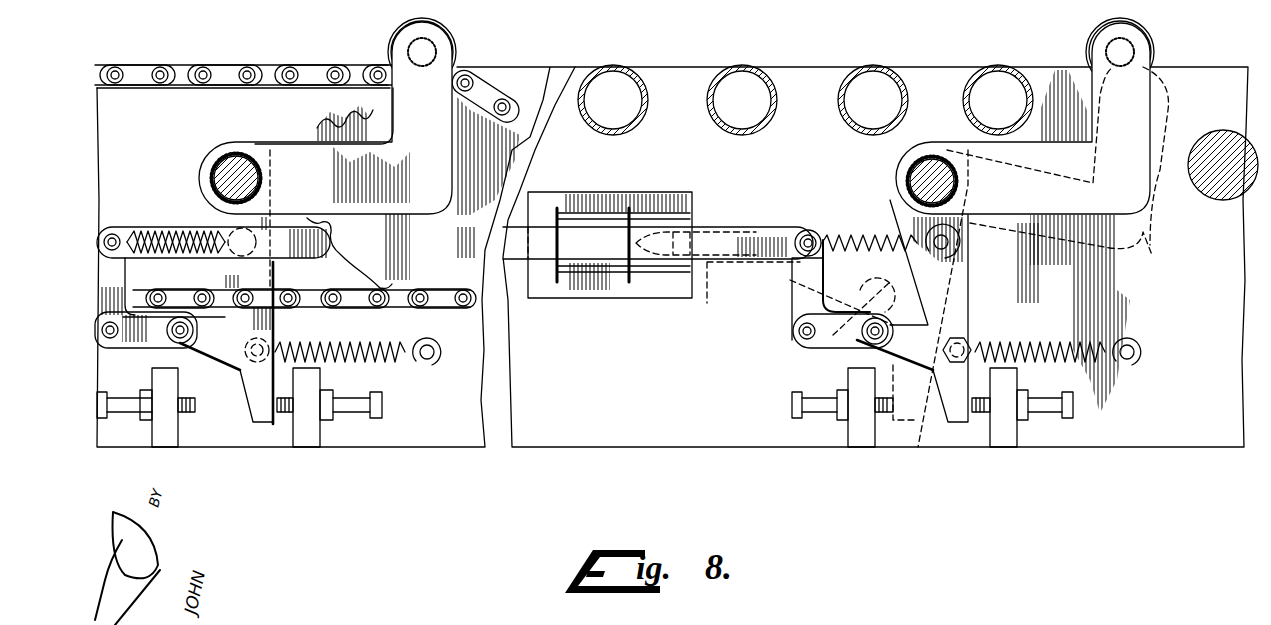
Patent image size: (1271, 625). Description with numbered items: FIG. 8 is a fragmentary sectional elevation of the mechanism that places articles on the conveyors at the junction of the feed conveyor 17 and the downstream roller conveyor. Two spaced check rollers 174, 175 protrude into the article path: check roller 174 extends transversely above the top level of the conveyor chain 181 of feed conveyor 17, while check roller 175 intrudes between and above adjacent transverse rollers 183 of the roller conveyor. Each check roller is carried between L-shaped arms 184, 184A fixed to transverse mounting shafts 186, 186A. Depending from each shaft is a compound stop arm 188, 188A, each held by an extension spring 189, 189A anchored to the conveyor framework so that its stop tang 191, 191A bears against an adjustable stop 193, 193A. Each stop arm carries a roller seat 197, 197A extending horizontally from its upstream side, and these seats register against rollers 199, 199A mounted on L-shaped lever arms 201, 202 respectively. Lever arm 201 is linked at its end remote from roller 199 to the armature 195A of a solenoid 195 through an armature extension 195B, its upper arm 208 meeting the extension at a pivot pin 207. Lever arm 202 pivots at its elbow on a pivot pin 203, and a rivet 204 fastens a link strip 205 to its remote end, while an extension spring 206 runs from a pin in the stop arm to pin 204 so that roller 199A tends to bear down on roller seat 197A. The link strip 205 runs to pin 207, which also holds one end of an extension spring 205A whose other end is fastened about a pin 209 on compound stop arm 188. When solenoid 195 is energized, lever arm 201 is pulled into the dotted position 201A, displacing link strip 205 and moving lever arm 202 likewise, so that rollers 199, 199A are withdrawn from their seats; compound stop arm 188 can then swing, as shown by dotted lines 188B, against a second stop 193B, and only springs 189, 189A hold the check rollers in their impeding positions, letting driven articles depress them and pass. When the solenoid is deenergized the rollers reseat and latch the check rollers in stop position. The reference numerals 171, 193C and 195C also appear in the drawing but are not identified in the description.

The feed conveyor 17 is at (178, 68).
The conveyor chain 181 is at (243, 70).
The check roller 174 is at (458, 44).
The transverse mounting shaft 186A is at (242, 165).
The rivet 204 is at (118, 232).
The link strip 205 is at (195, 228).
The extension spring 206 is at (185, 228).
The L-shaped arm 184A is at (420, 204).
The compound stop arm 188A is at (252, 268).
The roller 199A is at (185, 312).
The L-shaped lever arm 202 is at (148, 330).
The pivot pin 203 is at (110, 340).
The roller seat 197A is at (188, 345).
The extension spring 189A is at (395, 368).
The block 193C is at (188, 415).
The stop tang 191A is at (266, 428).
The adjustable stop 193A is at (292, 418).
The plate 171 is at (673, 82).
The transverse roller 183 is at (880, 65).
The check roller 175 is at (1148, 42).
The armature 195A is at (700, 228).
The armature extension 195B is at (768, 228).
The extension spring 205A is at (876, 228).
The pivot pin 207 is at (815, 232).
The transverse mounting shaft 186 is at (958, 181).
The L-shaped arm 184 is at (1152, 190).
The dotted-line position of compound stop arm 188B is at (1148, 242).
The pin 209 is at (957, 243).
The dotted position of lever arm 201A is at (850, 298).
The roller 199 is at (900, 307).
The upper arm 208 is at (792, 321).
The link 195C is at (753, 290).
The L-shaped lever arm 201 is at (796, 320).
The roller seat 197 is at (886, 350).
The compound stop arm 188 is at (962, 324).
The extension spring 189 is at (1090, 353).
The solenoid 195 is at (603, 268).
The second stop 193B is at (880, 418).
The stop tang 191 is at (960, 425).
The adjustable stop 193 is at (1000, 425).